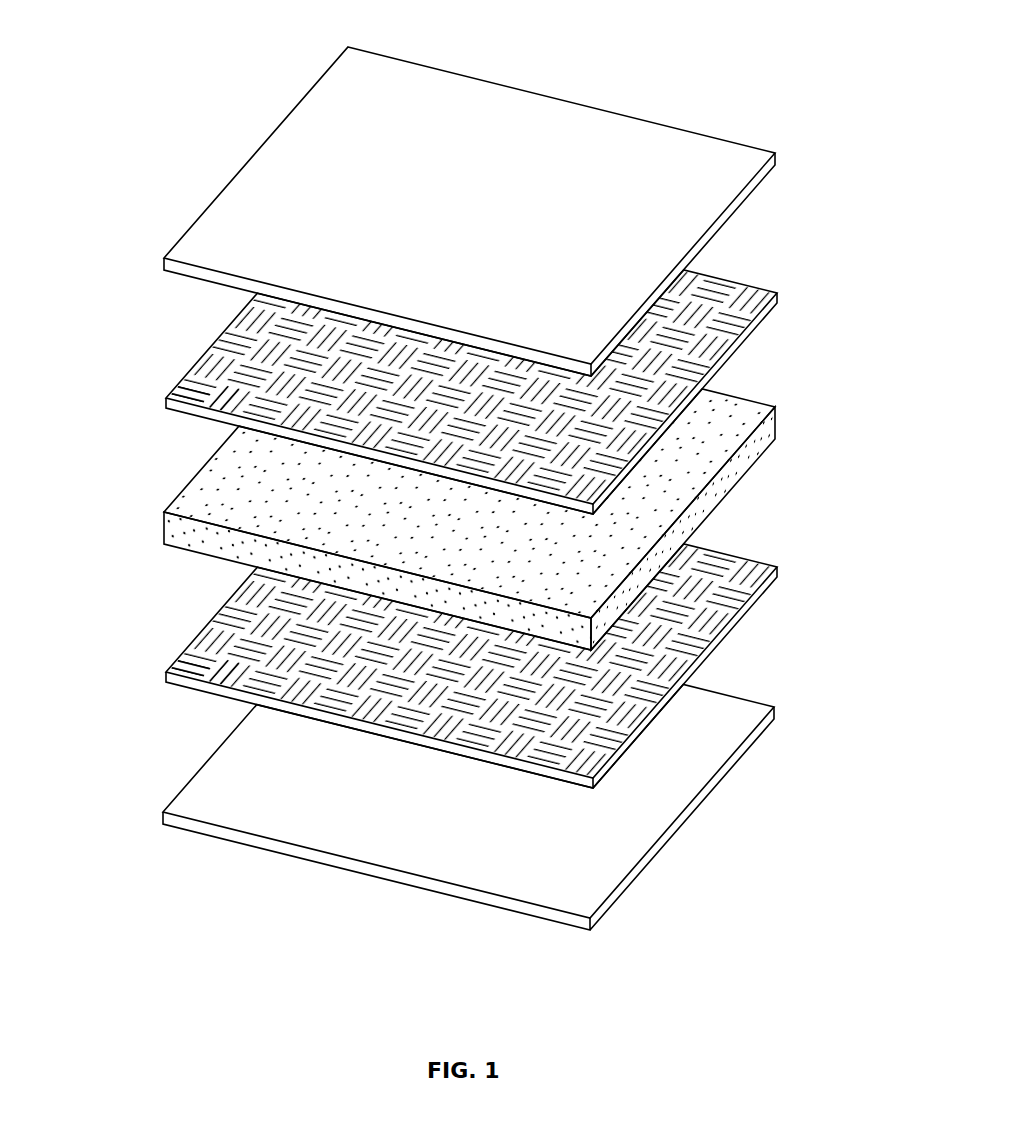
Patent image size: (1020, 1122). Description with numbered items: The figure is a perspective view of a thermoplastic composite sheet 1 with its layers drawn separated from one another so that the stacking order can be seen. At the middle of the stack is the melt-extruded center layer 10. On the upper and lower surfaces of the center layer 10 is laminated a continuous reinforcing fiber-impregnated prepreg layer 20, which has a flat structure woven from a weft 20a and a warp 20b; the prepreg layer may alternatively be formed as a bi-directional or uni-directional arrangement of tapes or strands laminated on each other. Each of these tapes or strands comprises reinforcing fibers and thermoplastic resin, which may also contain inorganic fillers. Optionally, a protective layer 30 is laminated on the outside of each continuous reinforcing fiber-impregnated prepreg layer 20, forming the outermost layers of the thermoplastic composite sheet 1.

The thermoplastic composite sheet 1 is at (160, 53).
The melt-extruded center layer 10 is at (762, 410).
The continuous reinforcing fiber-impregnated prepreg layer 20 is at (749, 264).
The weft 20a is at (185, 397).
The warp 20b is at (208, 395).
The protective layer 30 is at (697, 148).